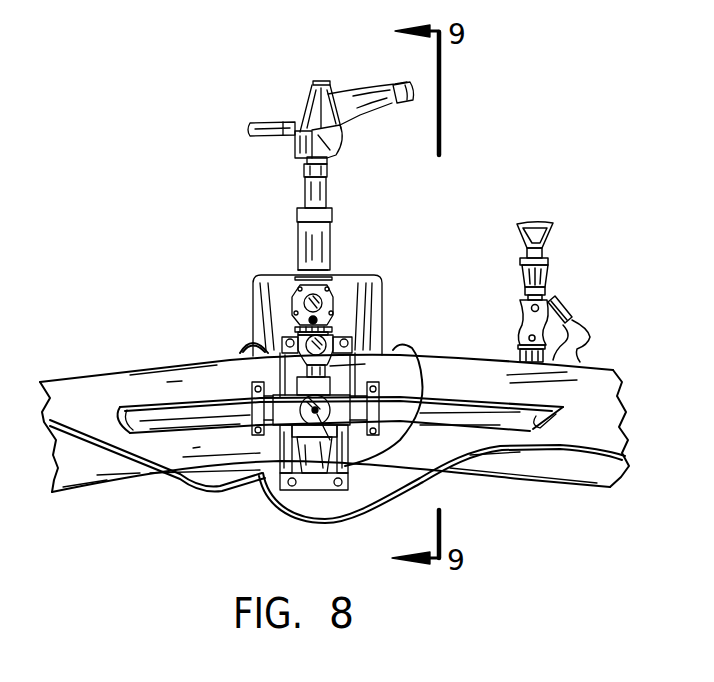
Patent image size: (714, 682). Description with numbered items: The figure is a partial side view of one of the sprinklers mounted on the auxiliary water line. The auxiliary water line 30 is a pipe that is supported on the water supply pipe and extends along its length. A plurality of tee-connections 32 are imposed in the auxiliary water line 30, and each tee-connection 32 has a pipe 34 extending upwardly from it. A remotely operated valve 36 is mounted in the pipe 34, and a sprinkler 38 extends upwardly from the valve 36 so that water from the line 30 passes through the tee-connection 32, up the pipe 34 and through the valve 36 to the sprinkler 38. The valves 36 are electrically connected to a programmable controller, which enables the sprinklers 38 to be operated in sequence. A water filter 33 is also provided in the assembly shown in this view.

The auxiliary water line 30 is at (447, 412).
The tee-connection 32 is at (328, 388).
The water filter 33 is at (317, 470).
The pipe 34 is at (295, 373).
The remotely operated valve 36 is at (328, 296).
The sprinkler 38 is at (327, 177).